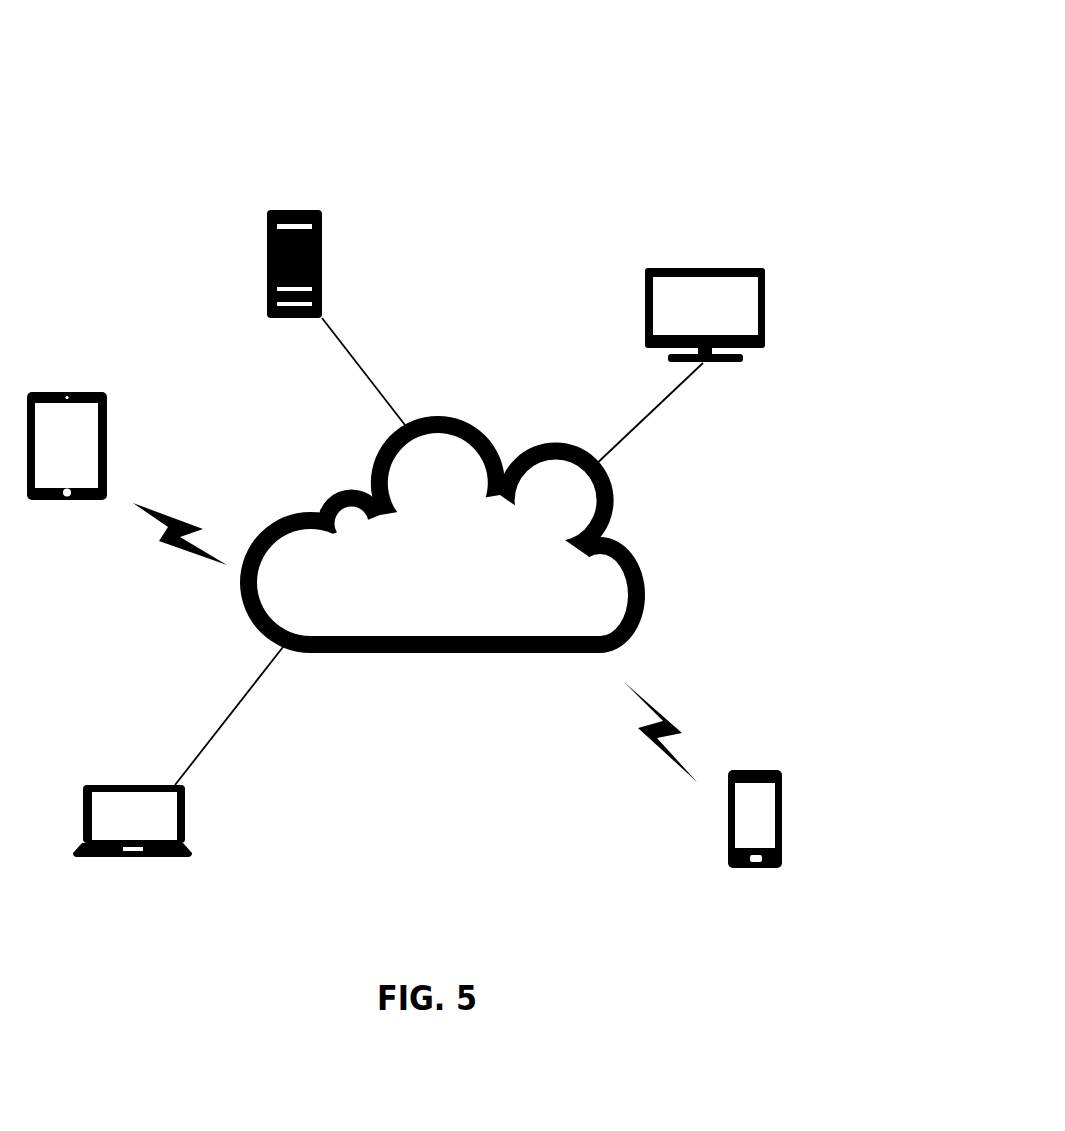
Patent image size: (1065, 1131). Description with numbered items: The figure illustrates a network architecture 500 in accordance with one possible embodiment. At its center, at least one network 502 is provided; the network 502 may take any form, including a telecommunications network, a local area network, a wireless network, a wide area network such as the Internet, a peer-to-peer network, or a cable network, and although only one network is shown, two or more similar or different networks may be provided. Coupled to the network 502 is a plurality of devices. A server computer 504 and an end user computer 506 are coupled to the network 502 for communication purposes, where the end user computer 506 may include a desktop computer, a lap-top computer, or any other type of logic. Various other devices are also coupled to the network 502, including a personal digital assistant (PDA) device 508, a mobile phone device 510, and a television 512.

The network architecture 500 is at (68, 82).
The network 502 is at (455, 653).
The server computer 504 is at (293, 208).
The end user computer 506 is at (127, 785).
The personal digital assistant (PDA) device 508 is at (68, 392).
The mobile phone device 510 is at (747, 770).
The television 512 is at (708, 268).